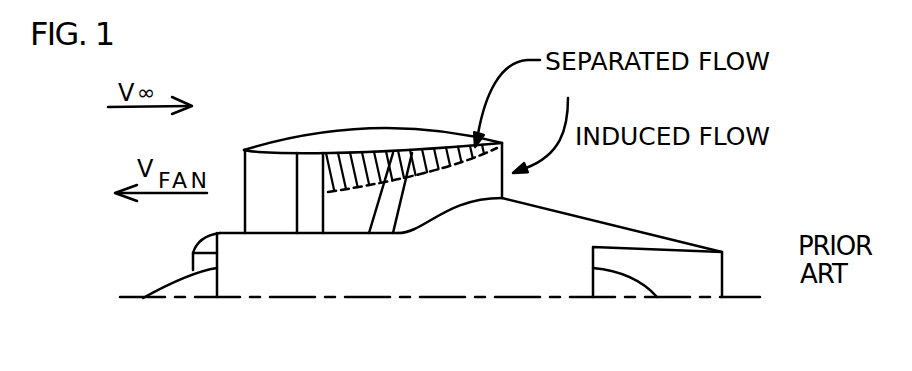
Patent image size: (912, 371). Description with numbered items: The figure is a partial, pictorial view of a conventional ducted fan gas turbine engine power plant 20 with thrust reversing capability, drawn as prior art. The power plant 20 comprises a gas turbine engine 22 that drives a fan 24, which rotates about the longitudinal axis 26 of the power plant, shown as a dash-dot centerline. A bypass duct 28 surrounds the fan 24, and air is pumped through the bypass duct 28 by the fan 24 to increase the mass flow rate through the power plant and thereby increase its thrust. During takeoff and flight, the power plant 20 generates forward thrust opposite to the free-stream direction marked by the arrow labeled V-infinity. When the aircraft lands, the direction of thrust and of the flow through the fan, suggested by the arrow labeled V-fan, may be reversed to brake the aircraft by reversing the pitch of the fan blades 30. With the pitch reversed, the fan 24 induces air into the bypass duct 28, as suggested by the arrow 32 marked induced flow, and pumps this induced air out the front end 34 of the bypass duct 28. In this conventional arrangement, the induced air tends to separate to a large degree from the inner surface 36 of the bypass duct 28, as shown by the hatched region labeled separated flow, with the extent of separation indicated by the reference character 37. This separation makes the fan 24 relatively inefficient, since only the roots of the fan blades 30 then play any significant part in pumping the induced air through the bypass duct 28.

The gas turbine engine power plant 20 is at (346, 108).
The gas turbine engine 22 is at (614, 210).
The fan 24 is at (282, 213).
The longitudinal axis 26 is at (402, 297).
The bypass duct 28 is at (286, 122).
The fan blades 30 is at (320, 223).
The arrow 32 is at (547, 157).
The front end 34 is at (245, 160).
The inner surface 36 is at (357, 158).
The extent of separation 37 is at (408, 178).